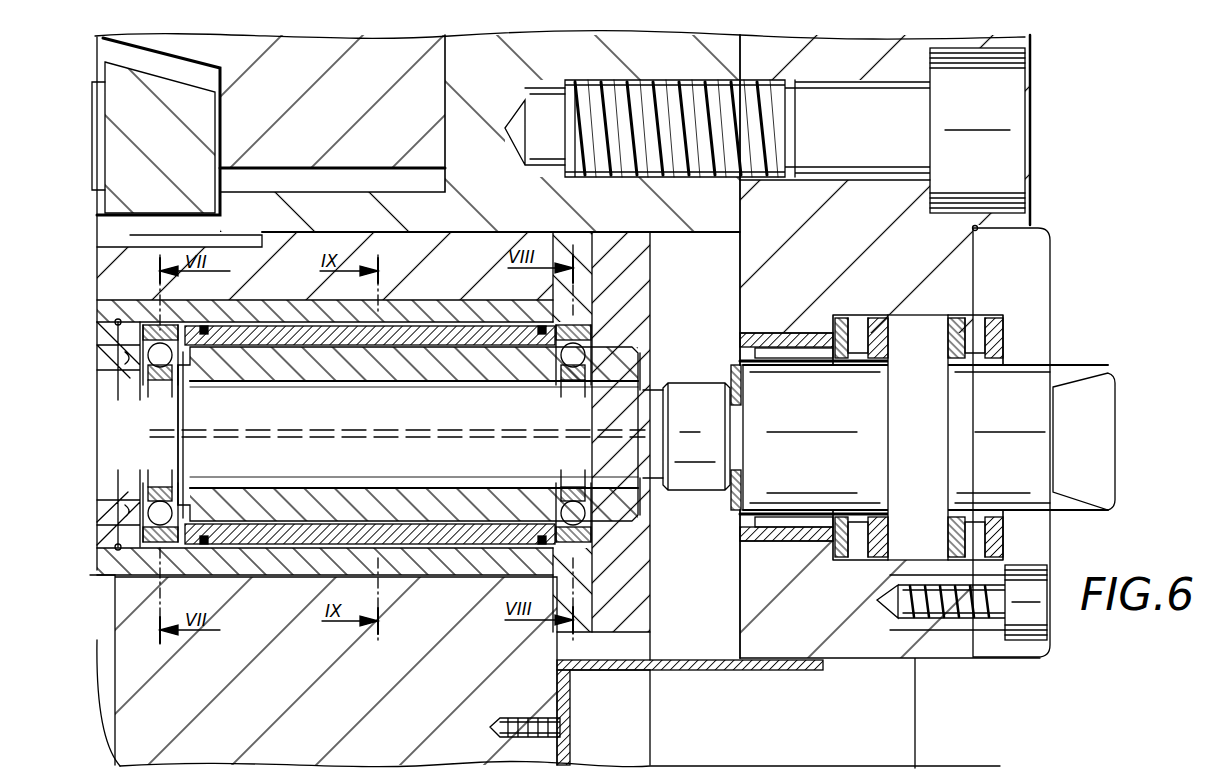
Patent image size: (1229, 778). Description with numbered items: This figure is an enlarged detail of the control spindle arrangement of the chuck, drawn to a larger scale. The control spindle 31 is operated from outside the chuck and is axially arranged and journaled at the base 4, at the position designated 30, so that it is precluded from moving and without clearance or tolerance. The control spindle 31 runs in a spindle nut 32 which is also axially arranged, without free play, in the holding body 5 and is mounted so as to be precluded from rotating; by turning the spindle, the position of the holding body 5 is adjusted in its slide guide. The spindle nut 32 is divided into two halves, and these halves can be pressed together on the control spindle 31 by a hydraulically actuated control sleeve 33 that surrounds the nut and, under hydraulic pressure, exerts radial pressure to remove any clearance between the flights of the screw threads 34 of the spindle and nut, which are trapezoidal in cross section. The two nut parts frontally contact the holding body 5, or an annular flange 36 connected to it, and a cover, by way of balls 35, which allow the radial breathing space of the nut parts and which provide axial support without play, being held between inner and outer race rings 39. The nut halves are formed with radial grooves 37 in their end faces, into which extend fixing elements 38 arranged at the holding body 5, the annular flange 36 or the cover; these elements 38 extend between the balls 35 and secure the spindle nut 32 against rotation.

The base 4 is at (834, 262).
The holding body 5 is at (637, 268).
The journal position of the control spindle 30 is at (918, 314).
The control spindle 31 is at (696, 470).
The spindle nut 32 is at (441, 370).
The control sleeve 33 is at (418, 328).
The screw threads 34 is at (339, 384).
The balls 35 is at (135, 386).
The annular flange 36 is at (125, 362).
The radial grooves 37 is at (190, 480).
The fixing elements 38 is at (197, 368).
The inner and outer race rings 39 is at (160, 485).